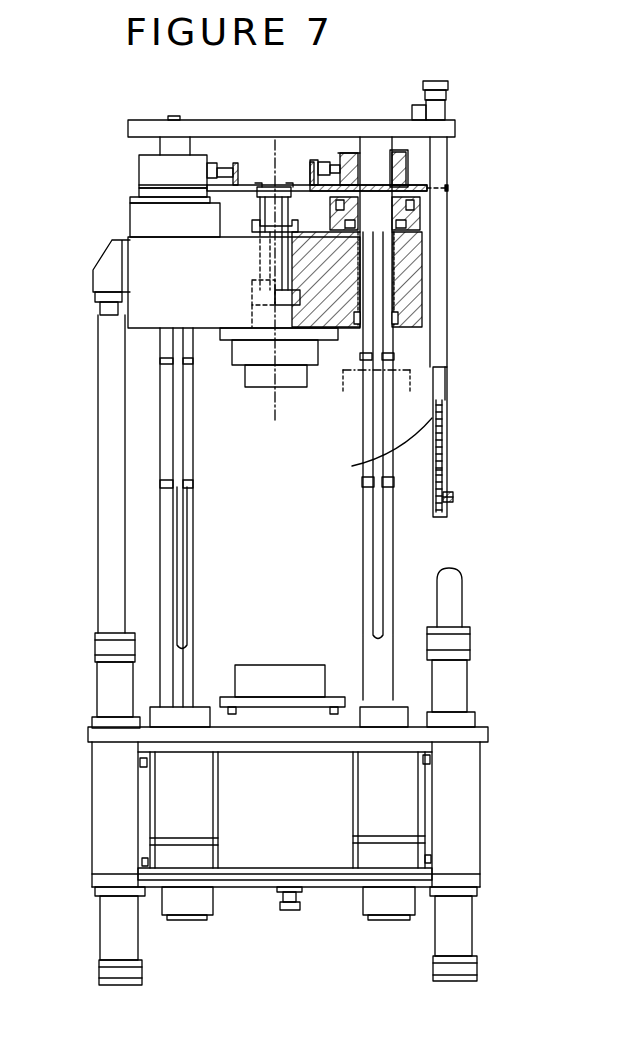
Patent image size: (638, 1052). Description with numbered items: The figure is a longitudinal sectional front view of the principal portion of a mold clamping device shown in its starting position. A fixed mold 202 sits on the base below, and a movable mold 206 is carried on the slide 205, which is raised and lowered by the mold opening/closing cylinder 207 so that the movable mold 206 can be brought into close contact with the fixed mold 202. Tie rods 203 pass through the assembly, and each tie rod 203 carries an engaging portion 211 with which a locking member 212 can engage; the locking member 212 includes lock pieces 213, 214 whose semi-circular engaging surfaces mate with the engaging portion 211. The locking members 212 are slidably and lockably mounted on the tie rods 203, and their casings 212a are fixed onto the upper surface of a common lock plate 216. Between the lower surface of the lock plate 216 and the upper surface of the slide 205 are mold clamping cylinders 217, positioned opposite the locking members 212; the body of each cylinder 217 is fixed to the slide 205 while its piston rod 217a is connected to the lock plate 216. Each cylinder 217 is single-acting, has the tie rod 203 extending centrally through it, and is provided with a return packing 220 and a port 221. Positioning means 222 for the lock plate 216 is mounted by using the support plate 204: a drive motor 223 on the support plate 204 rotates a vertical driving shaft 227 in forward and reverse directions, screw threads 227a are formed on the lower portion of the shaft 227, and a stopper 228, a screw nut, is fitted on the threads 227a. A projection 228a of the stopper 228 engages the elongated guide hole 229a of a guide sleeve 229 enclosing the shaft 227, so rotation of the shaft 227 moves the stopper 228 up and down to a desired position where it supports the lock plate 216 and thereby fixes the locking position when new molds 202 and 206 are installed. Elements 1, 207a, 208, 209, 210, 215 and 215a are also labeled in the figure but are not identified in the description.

The press apparatus 1 is at (303, 752).
The fixed mold 202 is at (280, 676).
The tie rod 203 is at (188, 592).
The support plate 204 is at (262, 130).
The slide 205 is at (137, 268).
The movable mold 206 is at (260, 372).
The mold opening/closing cylinder 207 is at (100, 696).
The piston rods 207a is at (110, 556).
The punch 208 is at (258, 293).
The ejector cap 209 is at (270, 190).
The collar 210 is at (265, 216).
The engaging portion 211 is at (362, 440).
The locking member 212 is at (400, 155).
The casing 212a is at (140, 173).
The lock piece 213 is at (350, 157).
The lock piece 214 is at (408, 170).
The coupling 215 is at (217, 163).
The coupling post 215a is at (327, 160).
The lock plate 216 is at (450, 188).
The mold clamping cylinder 217 is at (405, 222).
The piston rod 217a is at (410, 216).
The return packing 220 is at (315, 190).
The port 221 is at (330, 224).
The positioning means 222 is at (447, 337).
The drive motor 223 is at (448, 86).
The vertical driving shaft 227 is at (440, 386).
The screw threads 227a is at (441, 446).
The stopper 228 is at (450, 492).
The projection 228a is at (453, 500).
The guide sleeve 229 is at (371, 447).
The elongated guide hole 229a is at (487, 454).